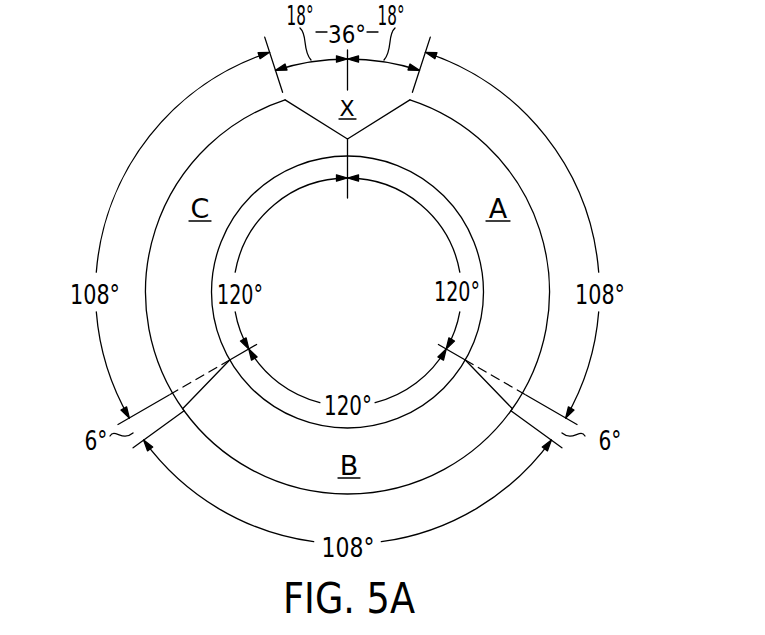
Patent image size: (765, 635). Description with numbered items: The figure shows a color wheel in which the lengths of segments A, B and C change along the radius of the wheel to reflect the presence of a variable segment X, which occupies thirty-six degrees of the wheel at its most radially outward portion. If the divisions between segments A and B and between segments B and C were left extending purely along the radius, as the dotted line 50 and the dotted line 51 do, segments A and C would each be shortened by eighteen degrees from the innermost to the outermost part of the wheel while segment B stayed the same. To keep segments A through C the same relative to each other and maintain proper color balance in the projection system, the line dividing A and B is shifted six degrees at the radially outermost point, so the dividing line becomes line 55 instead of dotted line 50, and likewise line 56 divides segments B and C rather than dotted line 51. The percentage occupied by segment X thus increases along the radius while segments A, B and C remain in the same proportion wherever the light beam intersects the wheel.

The dotted line 50 is at (493, 376).
The dotted line 51 is at (202, 376).
The line dividing A and B 55 is at (490, 387).
The line between segments B and C 56 is at (205, 387).